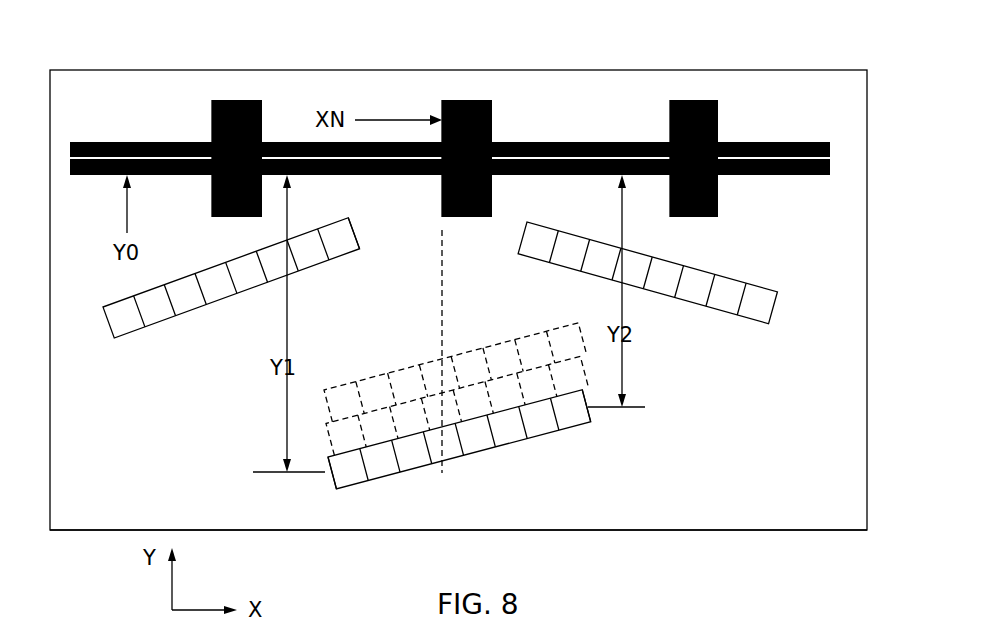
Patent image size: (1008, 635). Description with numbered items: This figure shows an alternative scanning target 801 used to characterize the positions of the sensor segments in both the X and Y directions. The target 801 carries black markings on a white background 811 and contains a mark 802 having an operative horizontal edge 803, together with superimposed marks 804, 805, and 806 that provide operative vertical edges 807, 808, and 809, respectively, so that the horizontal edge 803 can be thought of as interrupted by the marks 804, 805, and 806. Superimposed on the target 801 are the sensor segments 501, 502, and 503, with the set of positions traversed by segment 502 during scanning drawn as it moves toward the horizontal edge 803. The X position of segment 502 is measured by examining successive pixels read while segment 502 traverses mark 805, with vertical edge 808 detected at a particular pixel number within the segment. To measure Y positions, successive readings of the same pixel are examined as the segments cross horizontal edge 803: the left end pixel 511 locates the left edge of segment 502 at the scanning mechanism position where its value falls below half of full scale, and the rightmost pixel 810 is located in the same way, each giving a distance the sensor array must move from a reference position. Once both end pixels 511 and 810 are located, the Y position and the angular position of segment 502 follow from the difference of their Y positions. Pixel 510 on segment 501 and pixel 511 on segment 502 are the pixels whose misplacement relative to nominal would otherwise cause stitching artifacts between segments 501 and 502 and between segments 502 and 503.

The sensor segment 501 is at (155, 327).
The sensor segment 502 is at (473, 453).
The sensor segment 503 is at (777, 307).
The pixel 510 is at (347, 235).
The pixel 511 is at (340, 480).
The scanning target 801 is at (685, 530).
The mark 802 is at (740, 143).
The horizontal edge 803 is at (762, 177).
The mark 804 is at (228, 100).
The mark 805 is at (457, 100).
The mark 806 is at (685, 100).
The vertical edge 807 is at (212, 110).
The vertical edge 808 is at (442, 118).
The vertical edge 809 is at (670, 125).
The pixel 810 is at (568, 418).
The white background 811 is at (743, 88).